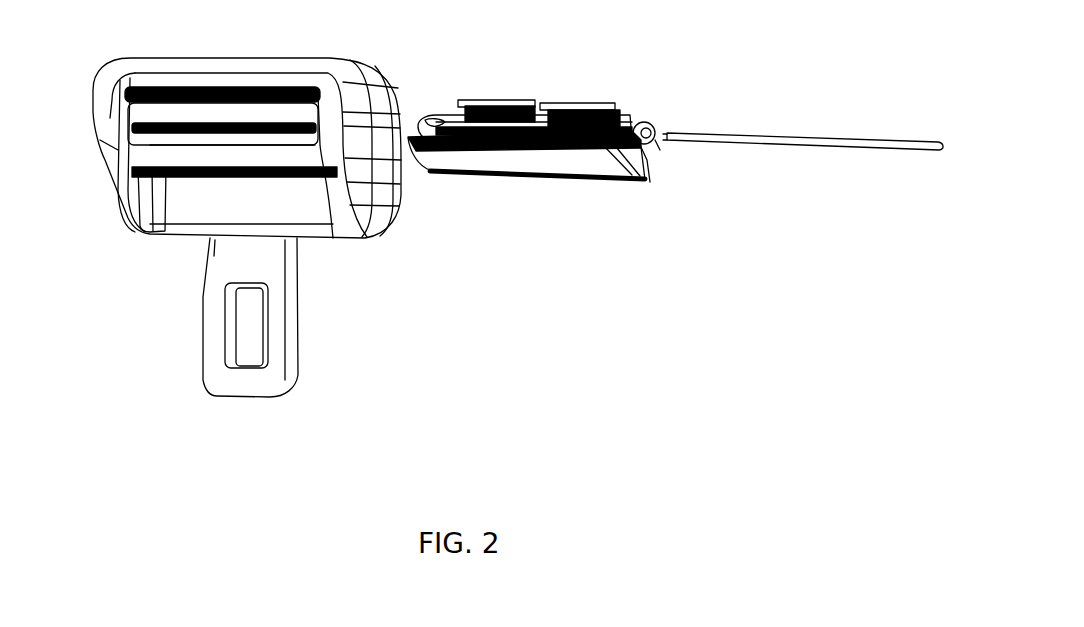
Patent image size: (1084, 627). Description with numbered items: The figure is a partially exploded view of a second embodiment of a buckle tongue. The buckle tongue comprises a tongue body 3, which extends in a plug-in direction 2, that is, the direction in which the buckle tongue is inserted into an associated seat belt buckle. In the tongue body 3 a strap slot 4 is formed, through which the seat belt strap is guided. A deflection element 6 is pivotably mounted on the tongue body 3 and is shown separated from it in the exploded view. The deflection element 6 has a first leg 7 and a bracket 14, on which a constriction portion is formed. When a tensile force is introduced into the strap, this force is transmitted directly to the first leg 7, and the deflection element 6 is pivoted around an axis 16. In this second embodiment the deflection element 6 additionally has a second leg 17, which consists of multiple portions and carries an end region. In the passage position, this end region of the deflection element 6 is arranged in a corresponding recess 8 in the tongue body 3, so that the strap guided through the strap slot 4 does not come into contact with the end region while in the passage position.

The plug-in direction 2 is at (243, 436).
The tongue body 3 is at (133, 317).
The strap slot 4 is at (188, 137).
The deflection element 6 is at (557, 238).
The first leg 7 is at (482, 150).
The recess 8 is at (143, 106).
The bracket 14 is at (645, 180).
The axis 16 is at (858, 195).
The second leg 17 is at (493, 107).